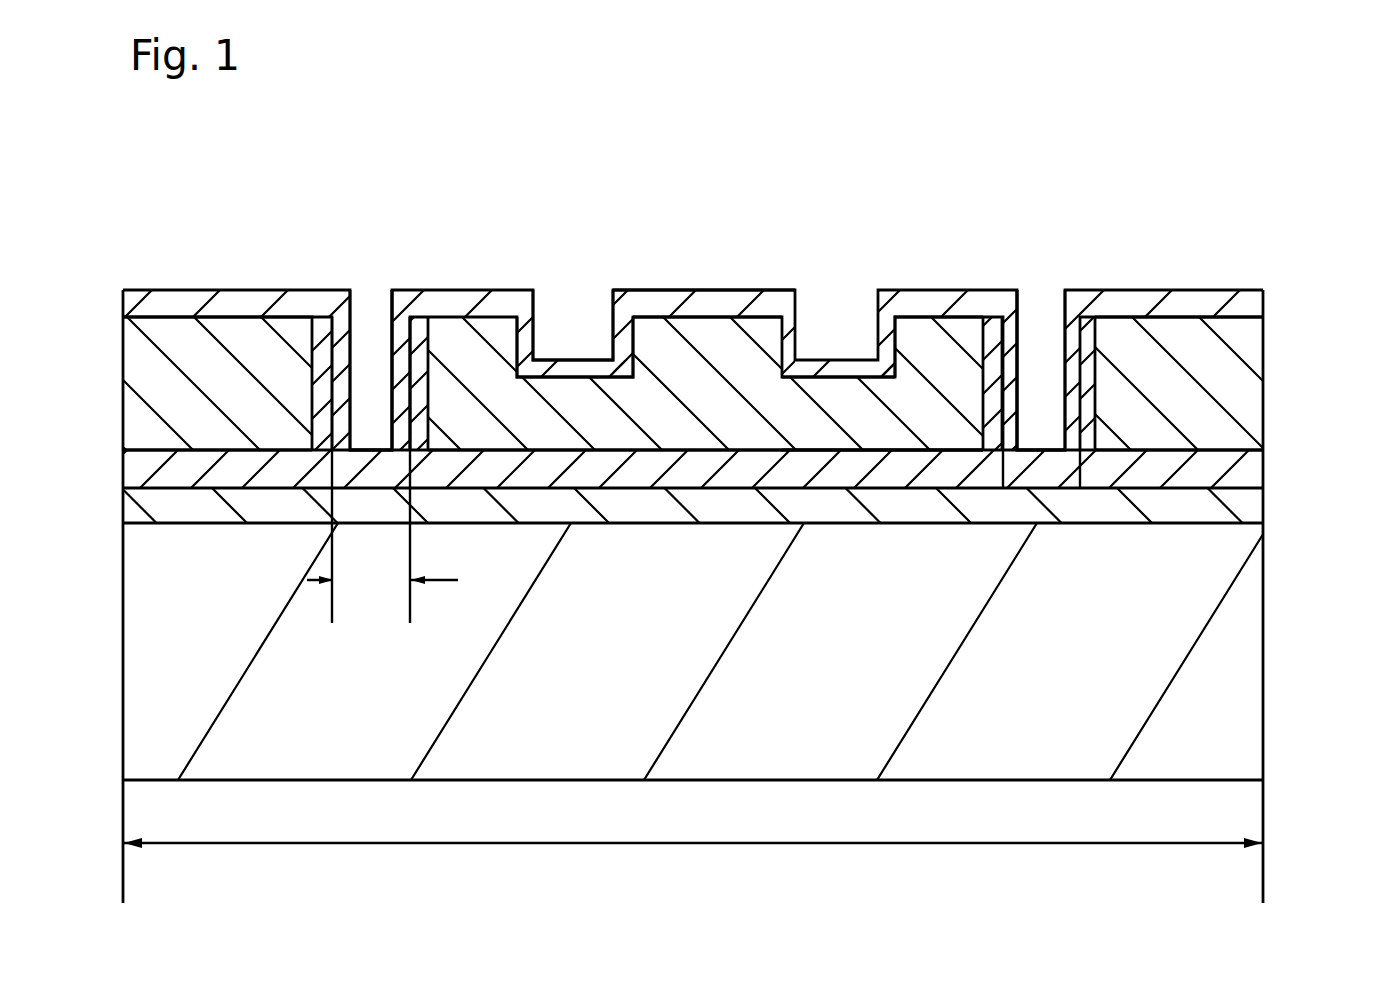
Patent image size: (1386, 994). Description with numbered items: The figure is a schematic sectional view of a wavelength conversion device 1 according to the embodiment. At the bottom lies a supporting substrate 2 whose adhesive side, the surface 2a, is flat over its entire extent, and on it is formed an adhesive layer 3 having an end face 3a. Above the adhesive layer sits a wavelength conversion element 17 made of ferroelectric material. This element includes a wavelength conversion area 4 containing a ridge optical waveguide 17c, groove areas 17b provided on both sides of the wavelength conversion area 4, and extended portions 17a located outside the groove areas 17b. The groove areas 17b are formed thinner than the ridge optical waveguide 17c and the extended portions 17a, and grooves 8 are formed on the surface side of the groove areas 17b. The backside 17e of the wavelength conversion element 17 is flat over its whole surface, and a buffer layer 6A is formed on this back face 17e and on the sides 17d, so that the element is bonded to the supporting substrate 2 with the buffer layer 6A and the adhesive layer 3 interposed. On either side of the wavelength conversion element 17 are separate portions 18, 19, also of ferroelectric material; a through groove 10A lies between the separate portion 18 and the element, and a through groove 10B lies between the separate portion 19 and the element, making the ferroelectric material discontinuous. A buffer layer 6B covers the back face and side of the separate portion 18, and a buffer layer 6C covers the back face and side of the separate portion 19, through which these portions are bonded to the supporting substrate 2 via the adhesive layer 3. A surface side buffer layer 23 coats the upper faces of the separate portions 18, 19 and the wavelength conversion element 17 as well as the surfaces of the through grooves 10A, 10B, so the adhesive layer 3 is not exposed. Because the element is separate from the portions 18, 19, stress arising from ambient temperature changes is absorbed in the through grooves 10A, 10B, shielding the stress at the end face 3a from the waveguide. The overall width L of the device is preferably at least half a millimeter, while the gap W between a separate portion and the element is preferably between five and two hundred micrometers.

The wavelength conversion device 1 is at (1303, 289).
The supporting substrate 2 is at (1247, 660).
The surface of the supporting substrate 2a is at (1266, 518).
The adhesive layer 3 is at (1265, 470).
The end face of the adhesive layer 3a is at (1265, 500).
The wavelength conversion area 4 is at (783, 270).
The buffer layer 6A is at (697, 470).
The buffer layer 6B is at (218, 478).
The buffer layer 6C is at (1155, 470).
The groove 8 is at (576, 372).
The through groove 10A is at (350, 283).
The through groove 10B is at (1075, 282).
The wavelength conversion element 17 is at (796, 298).
The extended portion 17a is at (928, 337).
The groove area 17b is at (838, 387).
The ridge optical waveguide 17c is at (677, 327).
The side of the wavelength conversion element 17d is at (393, 300).
The back face of the wavelength conversion element 17e is at (880, 452).
The separate portion 18 is at (222, 328).
The separate portion 19 is at (1190, 337).
The surface side buffer layer 23 is at (467, 298).
The gap W is at (375, 585).
The width of the device L is at (741, 847).